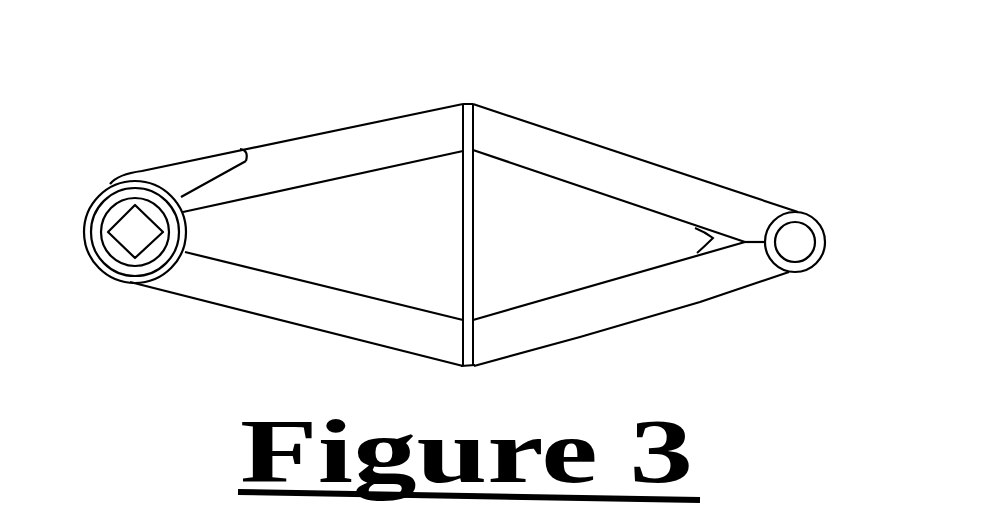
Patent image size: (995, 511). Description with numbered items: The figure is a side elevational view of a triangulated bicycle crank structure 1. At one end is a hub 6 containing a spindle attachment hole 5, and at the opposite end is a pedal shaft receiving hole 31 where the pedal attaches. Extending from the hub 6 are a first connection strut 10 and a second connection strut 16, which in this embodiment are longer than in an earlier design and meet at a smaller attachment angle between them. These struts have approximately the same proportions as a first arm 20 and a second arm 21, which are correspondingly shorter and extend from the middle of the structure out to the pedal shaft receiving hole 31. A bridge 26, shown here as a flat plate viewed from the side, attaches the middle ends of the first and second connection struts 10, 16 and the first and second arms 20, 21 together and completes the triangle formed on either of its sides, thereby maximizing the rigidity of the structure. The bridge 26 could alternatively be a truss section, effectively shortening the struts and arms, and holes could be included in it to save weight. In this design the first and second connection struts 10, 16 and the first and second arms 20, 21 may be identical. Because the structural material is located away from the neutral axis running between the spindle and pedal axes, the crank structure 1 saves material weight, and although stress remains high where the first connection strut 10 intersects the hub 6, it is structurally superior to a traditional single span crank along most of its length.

The crank structure 1 is at (252, 52).
The spindle attachment hole 5 is at (128, 253).
The hub 6 is at (106, 187).
The first connection strut 10 is at (353, 178).
The second connection strut 16 is at (370, 292).
The first arm 20 is at (627, 155).
The second arm 21 is at (636, 322).
The bridge 26 is at (473, 258).
The pedal shaft receiving hole 31 is at (805, 223).